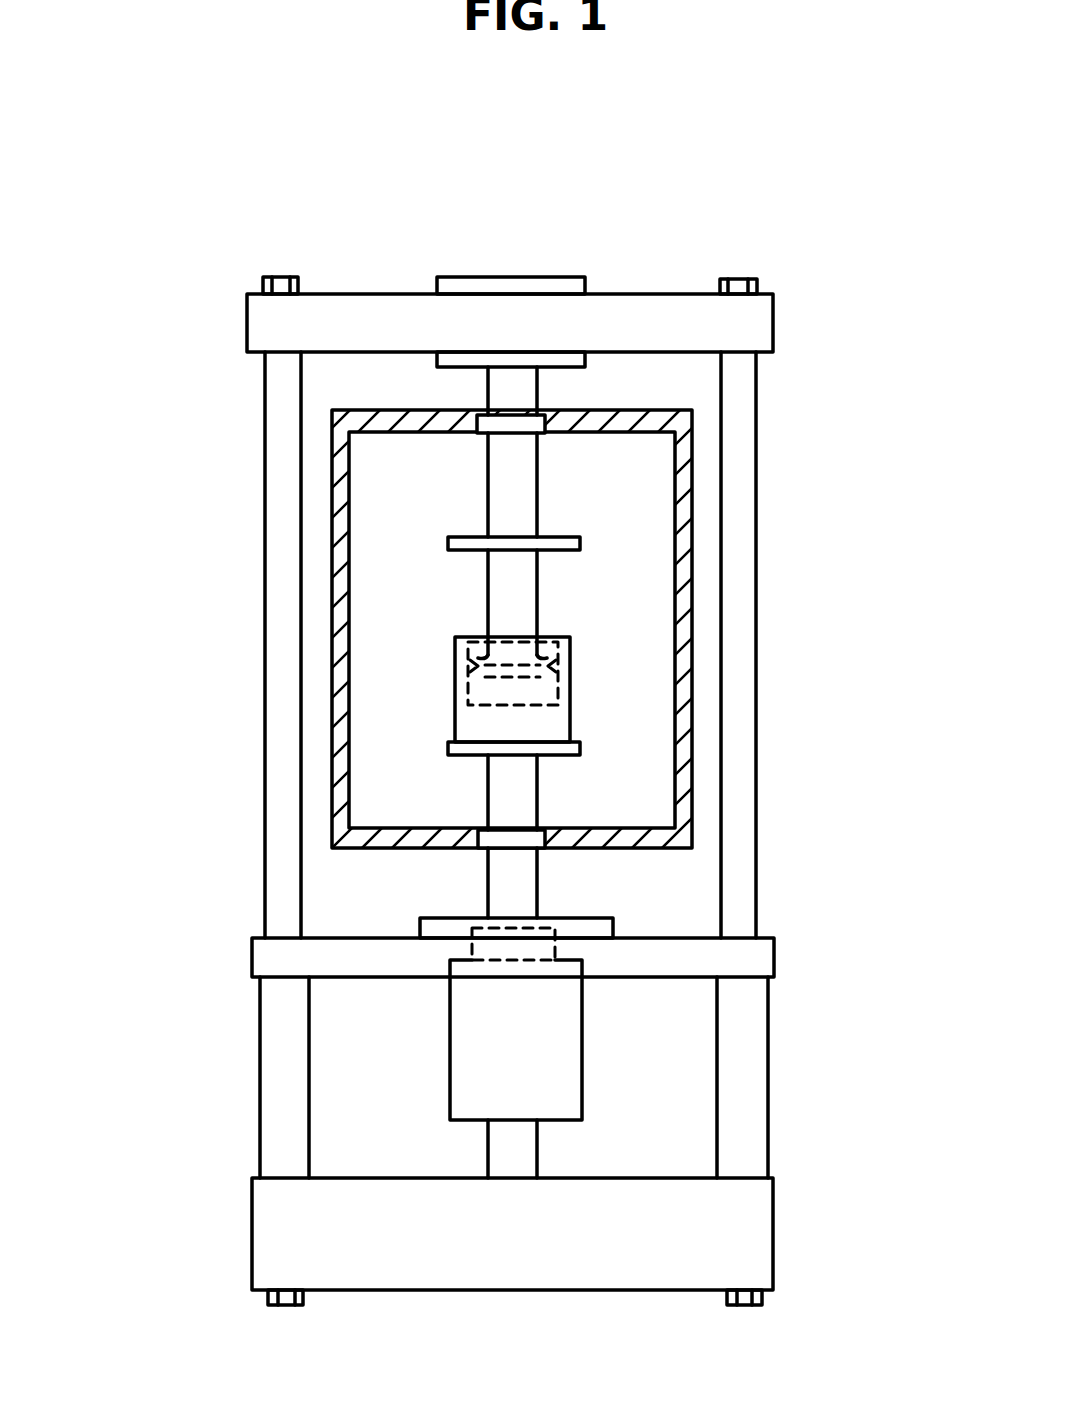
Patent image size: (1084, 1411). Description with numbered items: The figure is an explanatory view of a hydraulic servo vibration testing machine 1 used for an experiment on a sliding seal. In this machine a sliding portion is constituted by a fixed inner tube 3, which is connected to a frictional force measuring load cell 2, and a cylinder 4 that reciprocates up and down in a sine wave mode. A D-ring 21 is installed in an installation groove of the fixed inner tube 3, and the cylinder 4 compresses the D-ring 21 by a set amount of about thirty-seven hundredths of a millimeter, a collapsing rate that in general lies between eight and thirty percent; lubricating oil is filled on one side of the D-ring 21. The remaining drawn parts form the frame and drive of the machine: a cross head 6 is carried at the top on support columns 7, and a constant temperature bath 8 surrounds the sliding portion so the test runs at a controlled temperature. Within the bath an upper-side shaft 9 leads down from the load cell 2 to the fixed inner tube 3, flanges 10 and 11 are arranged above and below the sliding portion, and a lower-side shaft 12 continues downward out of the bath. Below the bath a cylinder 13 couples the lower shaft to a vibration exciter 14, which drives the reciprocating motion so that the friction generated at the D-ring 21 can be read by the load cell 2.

The hydraulic servo vibration testing machine 1 is at (533, 676).
The frictional force measuring load cell 2 is at (513, 290).
The fixed inner tube 3 is at (484, 772).
The cylinder 4 is at (545, 727).
The cross head 6 is at (748, 328).
The support columns 7 is at (738, 400).
The constant temperature bath 8 is at (682, 492).
The shaft (upper side) 9 is at (508, 488).
The flange 10 is at (448, 541).
The flange 11 is at (448, 750).
The shaft (lower side) 12 is at (512, 802).
The cylinder 13 is at (570, 927).
The vibration exciter 14 is at (553, 1038).
The D-ring 21 is at (468, 664).